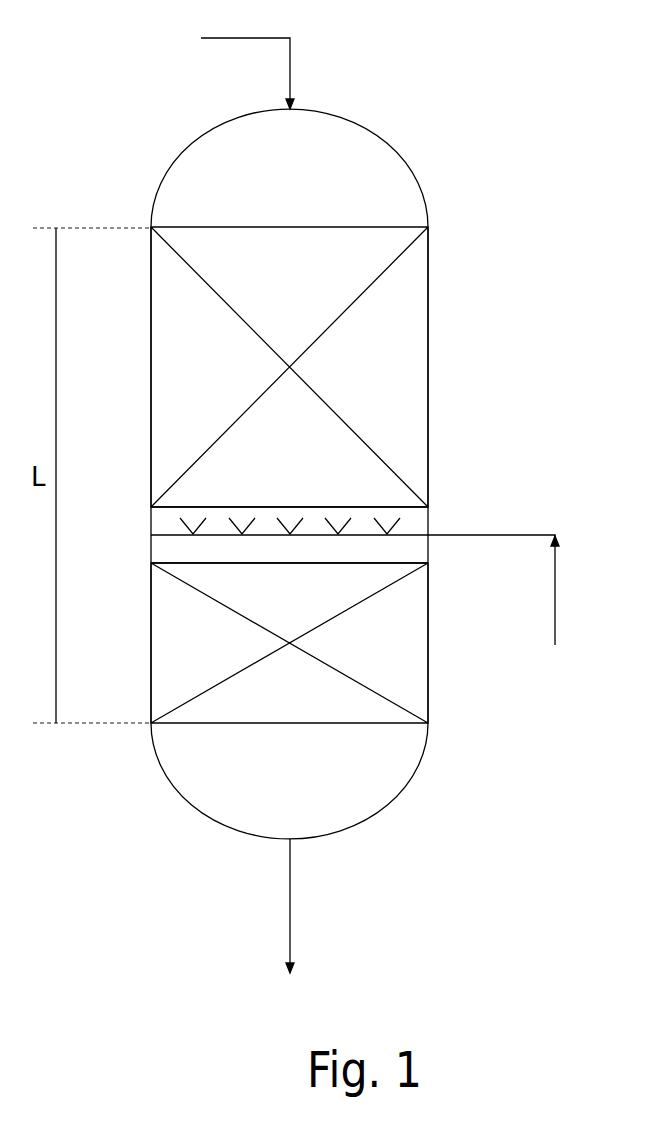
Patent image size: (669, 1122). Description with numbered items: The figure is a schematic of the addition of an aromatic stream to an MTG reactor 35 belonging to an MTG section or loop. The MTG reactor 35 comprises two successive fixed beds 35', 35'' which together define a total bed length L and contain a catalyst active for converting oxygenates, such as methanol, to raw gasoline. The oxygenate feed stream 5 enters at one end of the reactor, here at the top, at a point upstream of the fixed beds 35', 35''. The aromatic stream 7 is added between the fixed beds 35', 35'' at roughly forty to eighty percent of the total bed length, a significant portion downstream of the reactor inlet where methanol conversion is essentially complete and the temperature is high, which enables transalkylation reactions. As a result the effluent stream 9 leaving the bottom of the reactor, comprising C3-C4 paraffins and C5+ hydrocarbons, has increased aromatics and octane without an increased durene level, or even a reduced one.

The oxygenate feed stream 5 is at (247, 58).
The MTG reactor 35 is at (349, 474).
The first fixed bed 35' is at (352, 367).
The second fixed bed 35'' is at (225, 683).
The aromatic stream 7 is at (504, 599).
The effluent stream 9 is at (299, 906).